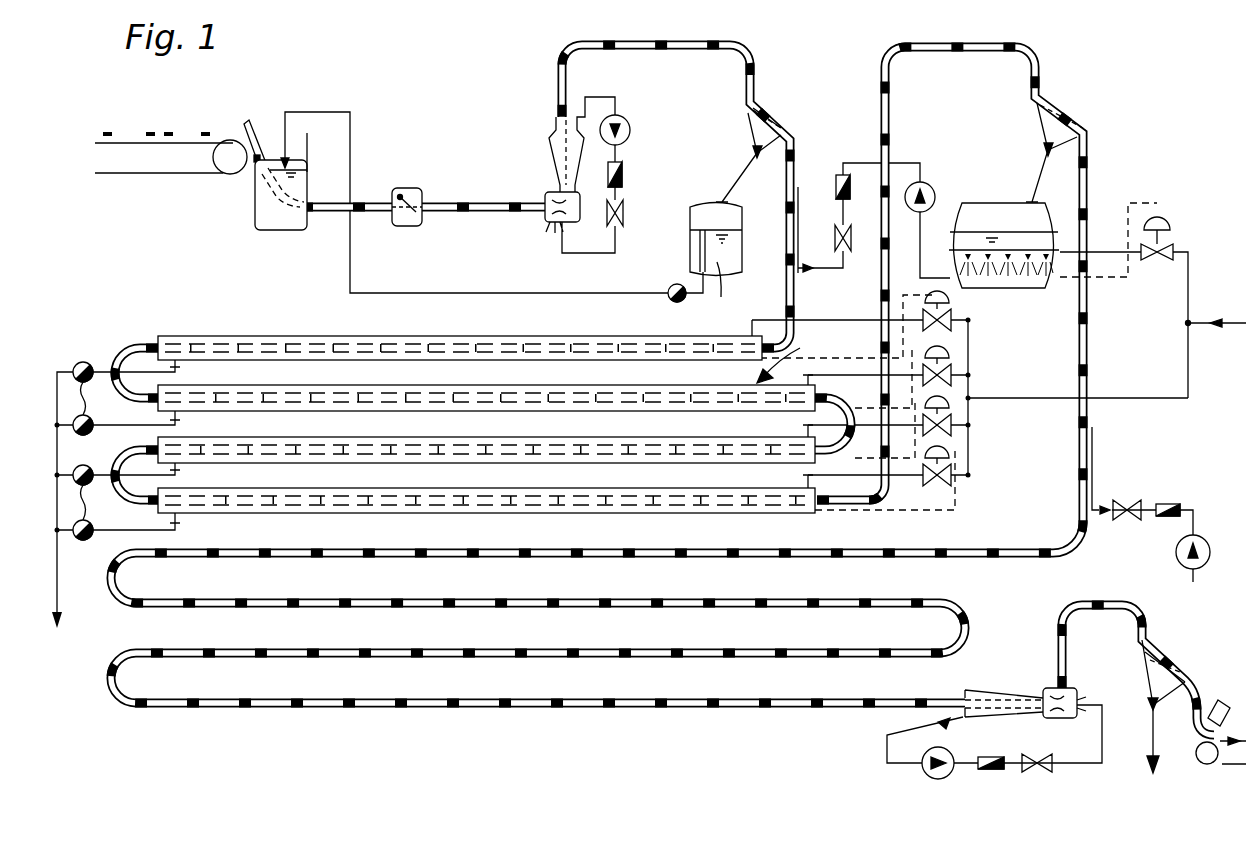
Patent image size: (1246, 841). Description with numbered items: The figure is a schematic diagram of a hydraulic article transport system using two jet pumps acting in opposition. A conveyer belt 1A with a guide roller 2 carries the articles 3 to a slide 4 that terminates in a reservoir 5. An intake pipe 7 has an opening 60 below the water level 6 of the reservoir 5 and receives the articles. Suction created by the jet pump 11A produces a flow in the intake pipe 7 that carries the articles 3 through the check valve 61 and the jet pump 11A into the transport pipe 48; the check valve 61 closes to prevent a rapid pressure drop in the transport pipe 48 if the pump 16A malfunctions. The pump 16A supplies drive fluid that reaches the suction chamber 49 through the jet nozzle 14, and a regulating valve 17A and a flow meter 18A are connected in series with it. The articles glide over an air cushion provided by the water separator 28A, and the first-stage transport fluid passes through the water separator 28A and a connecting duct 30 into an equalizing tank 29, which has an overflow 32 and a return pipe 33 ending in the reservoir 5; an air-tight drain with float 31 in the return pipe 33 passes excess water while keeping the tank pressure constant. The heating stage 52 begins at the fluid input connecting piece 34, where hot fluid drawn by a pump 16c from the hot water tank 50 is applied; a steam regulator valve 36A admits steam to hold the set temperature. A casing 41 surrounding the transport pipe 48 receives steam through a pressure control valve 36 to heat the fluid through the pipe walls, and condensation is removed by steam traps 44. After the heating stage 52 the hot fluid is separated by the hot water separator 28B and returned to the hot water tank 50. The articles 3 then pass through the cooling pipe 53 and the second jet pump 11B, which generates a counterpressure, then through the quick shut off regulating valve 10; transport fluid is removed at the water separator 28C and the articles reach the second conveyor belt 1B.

The conveyer belt 1A is at (133, 176).
The guide roller 2 is at (220, 172).
The articles 3 is at (150, 130).
The slide 4 is at (246, 167).
The opening 60 is at (240, 218).
The reservoir 5 is at (313, 180).
The water level 6 is at (306, 136).
The intake pipe 7 is at (325, 214).
The check valve 61 is at (408, 188).
The return pipe 33 is at (392, 292).
The transport pipe 48 is at (560, 77).
The jet pump 11A is at (551, 146).
The jet nozzle 14 is at (571, 226).
The suction chamber 49 is at (548, 226).
The pump 16A is at (630, 124).
The flow meter 18A is at (624, 173).
The regulating valve 17A is at (624, 215).
The water separator 28A is at (752, 126).
The connecting duct 30 is at (743, 176).
The equalizing tank 29 is at (690, 250).
The overflow 32 is at (733, 288).
The drain with float 31 is at (667, 296).
The fluid input connecting piece 34 is at (802, 276).
The hot water separator 28B is at (1043, 128).
The pump 16c is at (926, 184).
The hot water tank 50 is at (985, 203).
The steam regulator valve 36A is at (1176, 250).
The pressure control valve 36 is at (950, 372).
The casing 41 is at (437, 336).
The heating stage 52 is at (793, 356).
The steam traps 44 is at (116, 494).
The cooling pipe 53 is at (935, 560).
The second jet pump 11B is at (1030, 690).
The water separator 28C is at (1145, 676).
The quick shut off regulating valve 10 is at (1222, 700).
The second conveyor belt 1B is at (1207, 765).